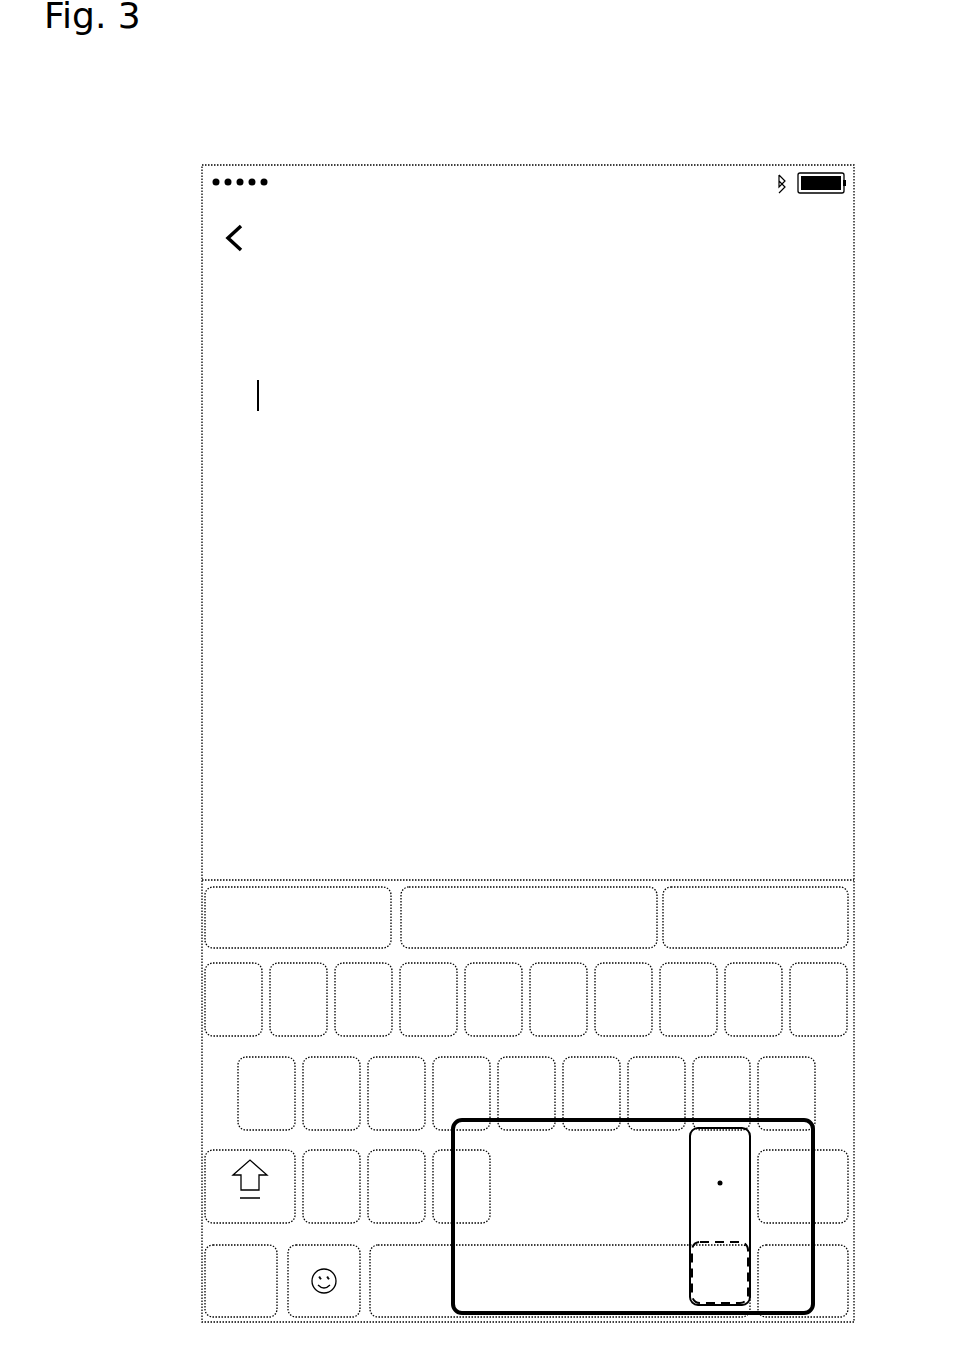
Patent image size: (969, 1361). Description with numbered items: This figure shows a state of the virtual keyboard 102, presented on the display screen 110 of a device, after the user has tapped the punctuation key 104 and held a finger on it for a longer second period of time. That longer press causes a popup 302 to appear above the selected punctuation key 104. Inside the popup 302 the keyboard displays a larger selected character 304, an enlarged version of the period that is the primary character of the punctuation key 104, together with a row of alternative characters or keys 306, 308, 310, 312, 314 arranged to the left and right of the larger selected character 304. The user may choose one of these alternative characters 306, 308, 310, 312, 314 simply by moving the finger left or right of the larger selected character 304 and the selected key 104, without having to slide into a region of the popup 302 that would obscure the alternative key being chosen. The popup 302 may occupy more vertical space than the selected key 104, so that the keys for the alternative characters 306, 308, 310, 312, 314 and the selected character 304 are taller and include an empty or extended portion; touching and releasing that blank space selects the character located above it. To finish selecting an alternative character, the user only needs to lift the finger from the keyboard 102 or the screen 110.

The virtual keyboard 102 is at (172, 991).
The punctuation key 104 is at (690, 1270).
The display screen 110 is at (201, 372).
The popup 302 is at (815, 1224).
The larger selected character 304 is at (719, 1188).
The alternative character 306 is at (487, 1194).
The alternative character 308 is at (543, 1194).
The alternative character 310 is at (601, 1194).
The alternative character 312 is at (659, 1192).
The alternative character 314 is at (778, 1190).